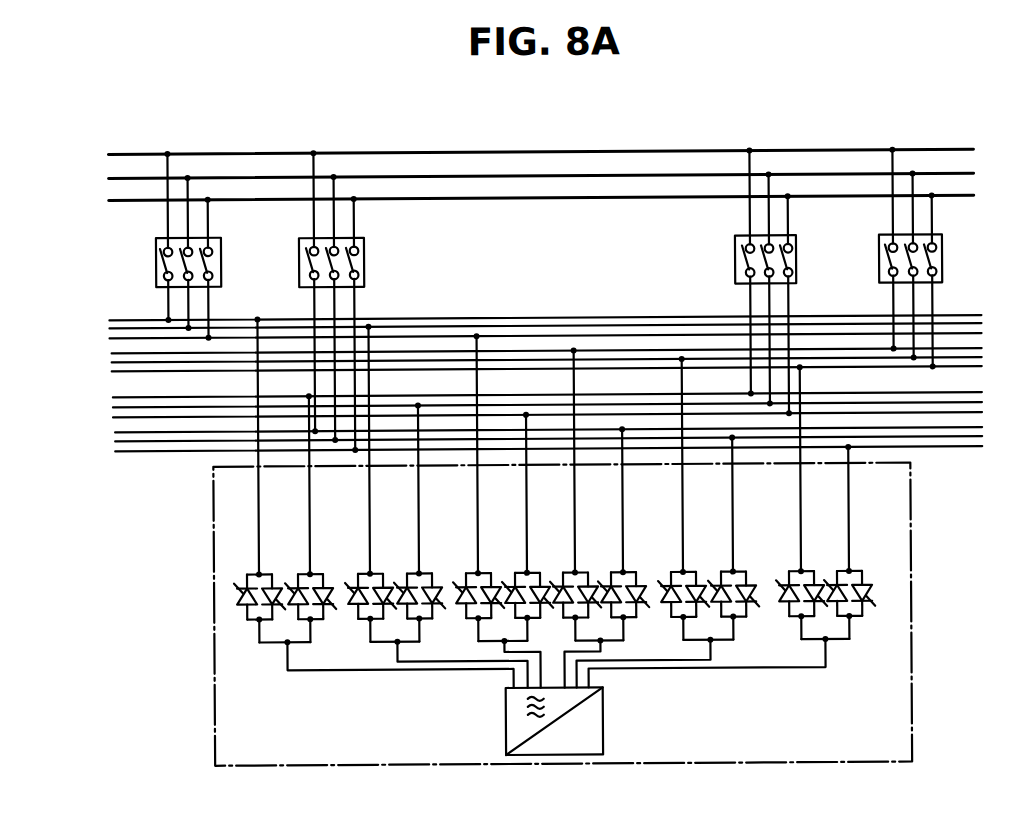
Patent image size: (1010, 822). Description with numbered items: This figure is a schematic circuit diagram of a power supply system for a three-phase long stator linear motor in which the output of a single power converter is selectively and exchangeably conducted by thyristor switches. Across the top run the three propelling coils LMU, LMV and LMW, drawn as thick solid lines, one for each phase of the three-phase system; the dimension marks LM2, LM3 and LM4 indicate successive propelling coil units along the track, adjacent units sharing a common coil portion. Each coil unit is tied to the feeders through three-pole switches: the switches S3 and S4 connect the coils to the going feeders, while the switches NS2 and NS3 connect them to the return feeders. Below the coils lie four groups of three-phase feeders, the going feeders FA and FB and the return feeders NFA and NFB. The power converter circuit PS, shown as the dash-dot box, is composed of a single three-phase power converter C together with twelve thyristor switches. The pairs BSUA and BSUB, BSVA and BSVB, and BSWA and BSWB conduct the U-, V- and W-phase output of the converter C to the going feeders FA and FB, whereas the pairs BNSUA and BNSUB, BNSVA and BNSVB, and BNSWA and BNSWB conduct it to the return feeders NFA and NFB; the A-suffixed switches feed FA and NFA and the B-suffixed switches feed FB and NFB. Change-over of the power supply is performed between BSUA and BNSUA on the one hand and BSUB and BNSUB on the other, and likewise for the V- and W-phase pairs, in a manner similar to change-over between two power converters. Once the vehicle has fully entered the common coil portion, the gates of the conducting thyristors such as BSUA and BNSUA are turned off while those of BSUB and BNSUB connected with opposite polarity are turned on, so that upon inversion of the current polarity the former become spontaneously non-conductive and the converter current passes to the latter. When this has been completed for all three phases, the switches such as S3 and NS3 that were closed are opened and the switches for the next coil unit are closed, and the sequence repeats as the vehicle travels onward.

The propelling coil LMU is at (102, 153).
The propelling coil LMV is at (102, 177).
The propelling coil LMW is at (108, 200).
The main line section 2 LM2 is at (353, 106).
The main line section 3 LM3 is at (929, 124).
The main line section 4 LM4 is at (747, 106).
The switch S3 is at (159, 256).
The switch S4 is at (736, 260).
The switch NS2 is at (301, 257).
The switch NS3 is at (878, 261).
The going feeder FA is at (101, 314).
The return feeder NFA is at (101, 347).
The going feeder FB is at (102, 390).
The return feeder NFB is at (103, 428).
The thyristor switch BSUA is at (242, 578).
The thyristor switch BSUB is at (293, 578).
The thyristor switch BSVA is at (352, 578).
The thyristor switch BSVB is at (401, 578).
The thyristor switch BSWA is at (460, 578).
The thyristor switch BSWB is at (509, 578).
The thyristor switch BNSUA is at (557, 578).
The thyristor switch BNSUB is at (605, 578).
The thyristor switch BNSVA is at (665, 578).
The thyristor switch BNSVB is at (715, 578).
The thyristor switch BNSWA is at (784, 578).
The thyristor switch BNSWB is at (831, 578).
The power converter circuit PS is at (911, 488).
The three-phase power converter C is at (603, 699).